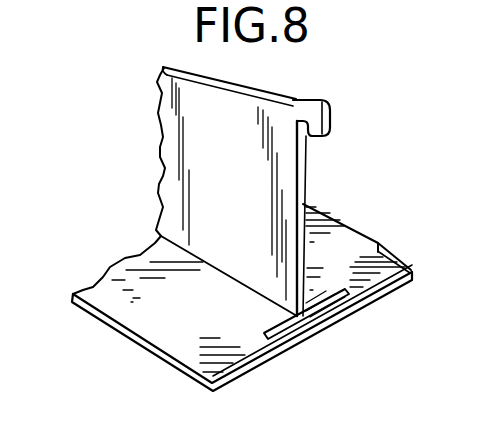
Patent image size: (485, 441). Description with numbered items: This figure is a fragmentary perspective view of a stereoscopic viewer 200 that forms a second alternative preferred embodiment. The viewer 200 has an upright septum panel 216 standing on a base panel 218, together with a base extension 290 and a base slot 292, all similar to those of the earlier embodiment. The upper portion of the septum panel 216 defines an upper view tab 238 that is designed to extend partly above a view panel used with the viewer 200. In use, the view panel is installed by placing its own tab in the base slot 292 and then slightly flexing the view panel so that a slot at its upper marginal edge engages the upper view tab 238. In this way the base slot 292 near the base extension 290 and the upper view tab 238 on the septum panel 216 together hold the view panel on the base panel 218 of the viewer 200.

The stereoscopic viewer 200 is at (146, 177).
The septum panel 216 is at (250, 190).
The base panel 218 is at (217, 313).
The upper view tab 238 is at (332, 115).
The base extension 290 is at (242, 352).
The base slot 292 is at (325, 305).